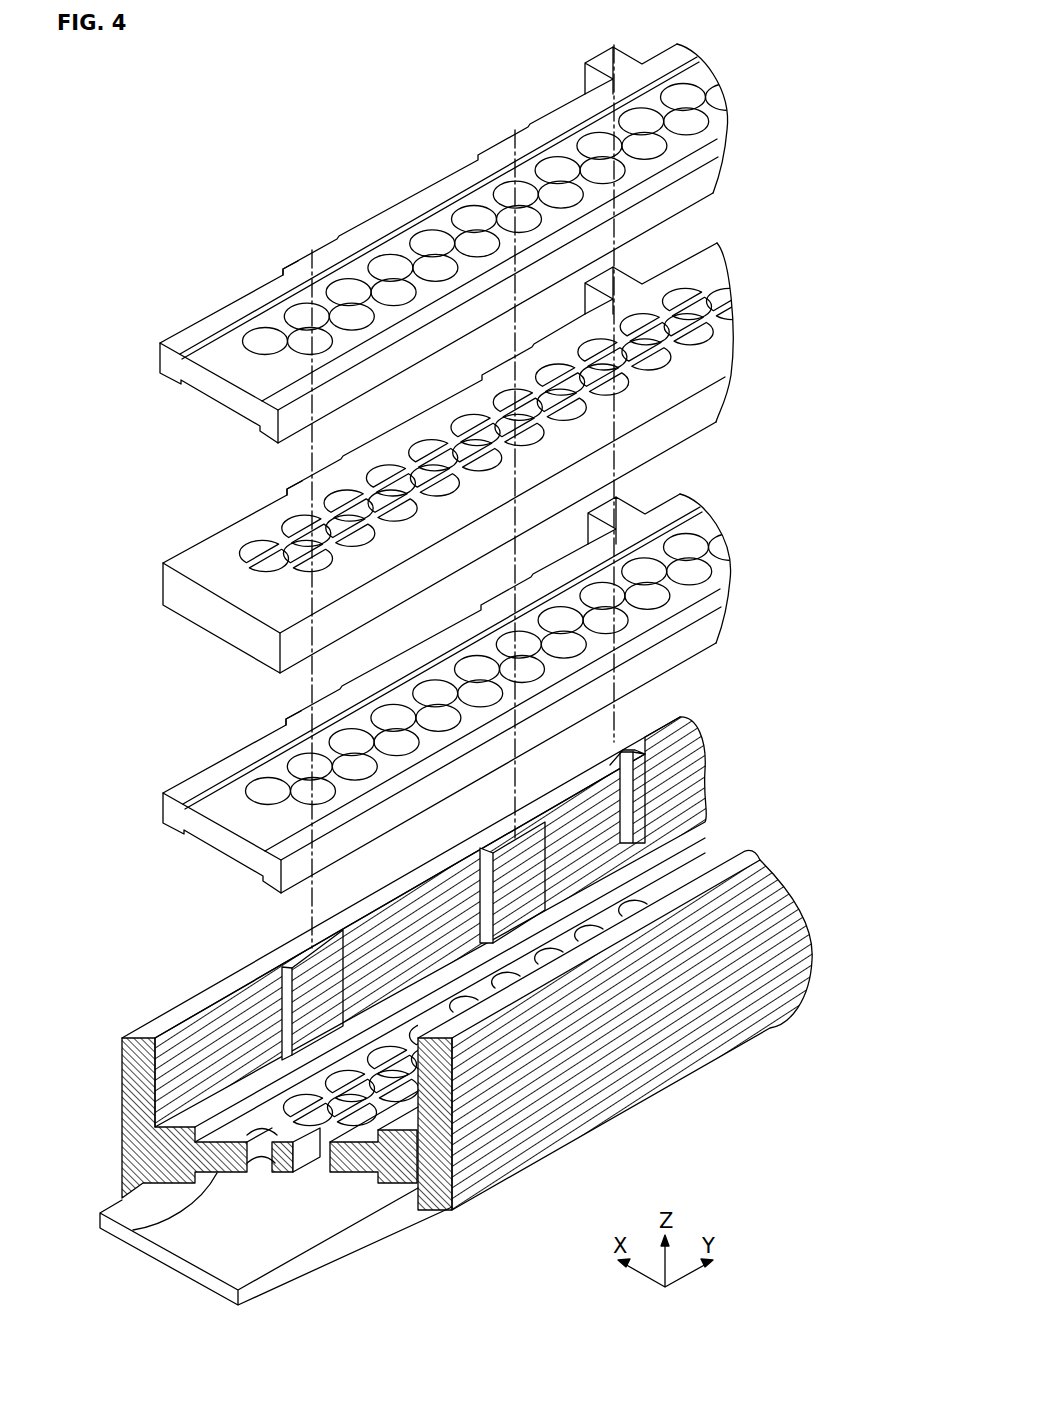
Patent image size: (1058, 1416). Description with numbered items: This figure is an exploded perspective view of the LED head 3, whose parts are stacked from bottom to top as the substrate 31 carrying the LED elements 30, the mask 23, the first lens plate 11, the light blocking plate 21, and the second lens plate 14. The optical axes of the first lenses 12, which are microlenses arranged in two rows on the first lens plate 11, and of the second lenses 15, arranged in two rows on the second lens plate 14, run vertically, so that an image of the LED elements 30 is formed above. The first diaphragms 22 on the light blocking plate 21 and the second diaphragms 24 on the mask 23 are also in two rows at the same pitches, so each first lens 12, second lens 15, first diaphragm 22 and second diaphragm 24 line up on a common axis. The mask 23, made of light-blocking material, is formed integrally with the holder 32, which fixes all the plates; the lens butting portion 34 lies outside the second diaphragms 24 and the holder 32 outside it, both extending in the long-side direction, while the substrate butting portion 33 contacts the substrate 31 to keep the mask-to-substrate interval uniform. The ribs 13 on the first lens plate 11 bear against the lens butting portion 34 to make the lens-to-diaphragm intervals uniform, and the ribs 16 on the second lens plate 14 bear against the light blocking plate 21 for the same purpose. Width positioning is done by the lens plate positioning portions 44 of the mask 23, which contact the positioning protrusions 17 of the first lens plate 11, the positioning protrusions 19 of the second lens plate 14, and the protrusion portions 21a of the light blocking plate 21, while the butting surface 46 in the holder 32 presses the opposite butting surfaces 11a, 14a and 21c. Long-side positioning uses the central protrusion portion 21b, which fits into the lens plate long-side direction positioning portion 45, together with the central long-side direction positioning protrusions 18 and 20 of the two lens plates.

The LED head 3 is at (170, 130).
The first lens plate 11 is at (469, 679).
The butting surface 11a is at (538, 750).
The first lenses 12 is at (489, 669).
The ribs 13 is at (441, 658).
The second lens plate 14 is at (462, 240).
The butting surface 14a is at (714, 181).
The second lenses 15 is at (258, 337).
The ribs 16 is at (265, 287).
The positioning protrusions 17 is at (267, 703).
The long-side direction positioning protrusion 18 is at (642, 504).
The positioning protrusions 19 is at (297, 250).
The long-side direction positioning protrusion 20 is at (595, 56).
The light blocking plate 21 is at (478, 452).
The protrusion portions 21a is at (295, 476).
The protrusion portion 21b is at (628, 278).
The butting surface 21c is at (718, 408).
The first diaphragms 22 is at (253, 548).
The mask 23 is at (337, 1167).
The second diaphragms 24 is at (400, 1132).
The LED elements 30 is at (424, 1014).
The substrate 31 is at (120, 1212).
The holder 32 is at (392, 957).
The substrate butting portion 33 is at (126, 1242).
The lens butting portion 34 is at (193, 1123).
The lens plate positioning portions 44 is at (300, 958).
The lens plate long-side direction positioning portion 45 is at (645, 782).
The butting surface 46 is at (705, 853).